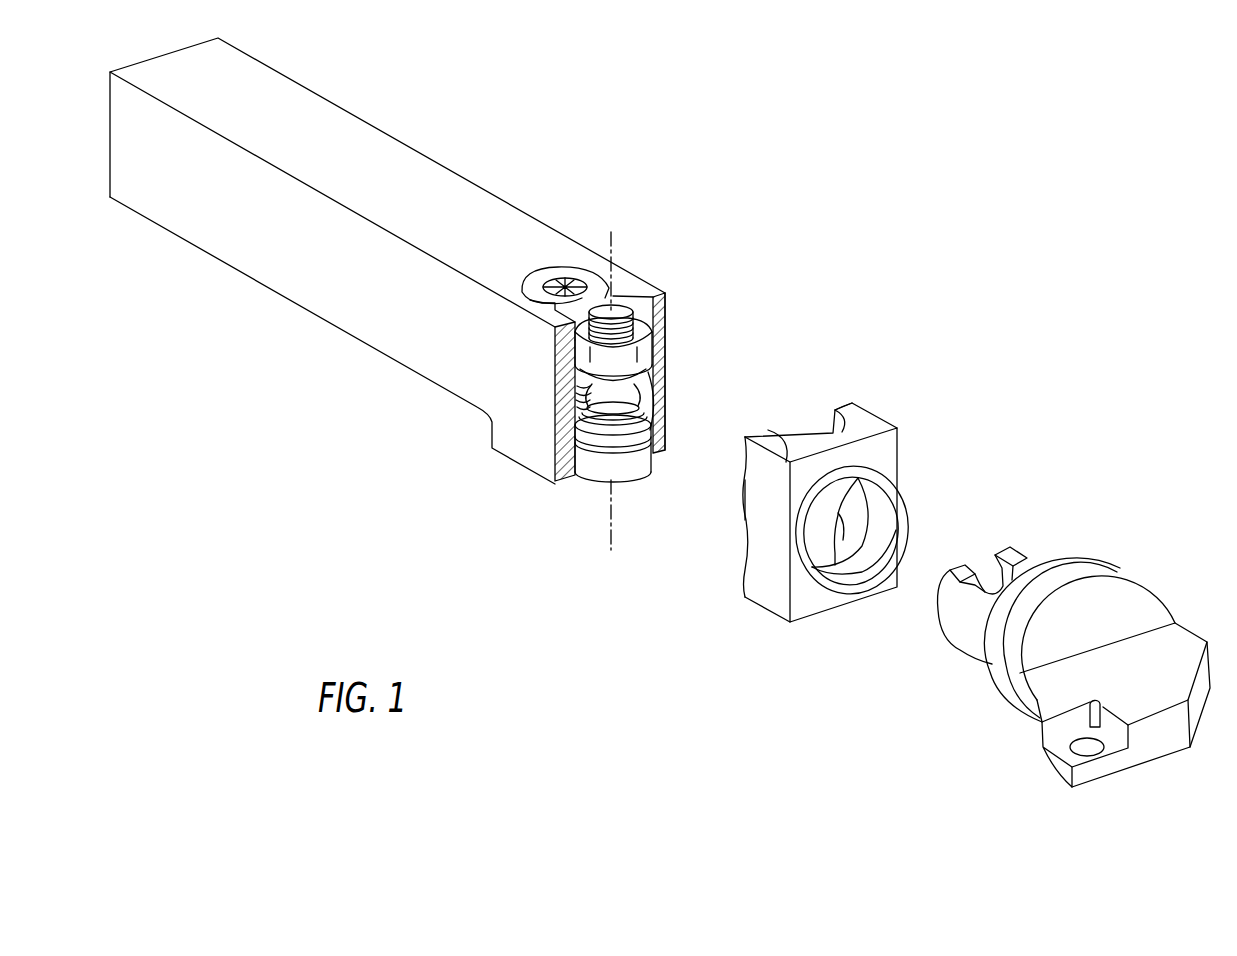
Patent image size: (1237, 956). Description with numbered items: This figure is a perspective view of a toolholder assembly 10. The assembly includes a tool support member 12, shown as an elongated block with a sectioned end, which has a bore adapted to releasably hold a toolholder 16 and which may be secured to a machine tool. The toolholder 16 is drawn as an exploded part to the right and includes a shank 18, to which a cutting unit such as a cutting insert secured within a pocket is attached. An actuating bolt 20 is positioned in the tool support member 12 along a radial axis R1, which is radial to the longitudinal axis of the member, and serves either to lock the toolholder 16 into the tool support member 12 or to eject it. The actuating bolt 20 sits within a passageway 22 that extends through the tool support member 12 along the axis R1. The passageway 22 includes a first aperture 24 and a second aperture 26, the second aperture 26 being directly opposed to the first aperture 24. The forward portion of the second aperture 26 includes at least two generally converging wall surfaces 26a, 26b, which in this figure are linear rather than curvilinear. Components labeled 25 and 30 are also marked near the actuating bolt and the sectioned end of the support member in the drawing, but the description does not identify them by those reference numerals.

The toolholder assembly 10 is at (898, 256).
The tool support member 12 is at (427, 175).
The toolholder 16 is at (1143, 605).
The shank 18 is at (1020, 567).
The actuating bolt 20 is at (617, 463).
The passageway 22 is at (660, 312).
The first aperture 24 is at (573, 483).
The nut 25 is at (655, 342).
The second aperture 26 is at (840, 412).
The converging wall surface 26a is at (880, 413).
The converging wall surface 26b is at (743, 487).
The pocket 30 is at (665, 457).
The radial axis R1 is at (612, 250).